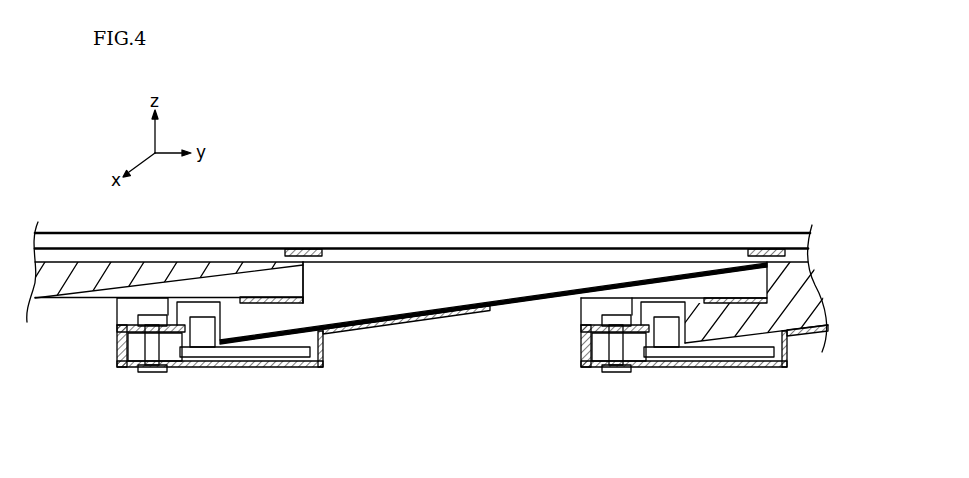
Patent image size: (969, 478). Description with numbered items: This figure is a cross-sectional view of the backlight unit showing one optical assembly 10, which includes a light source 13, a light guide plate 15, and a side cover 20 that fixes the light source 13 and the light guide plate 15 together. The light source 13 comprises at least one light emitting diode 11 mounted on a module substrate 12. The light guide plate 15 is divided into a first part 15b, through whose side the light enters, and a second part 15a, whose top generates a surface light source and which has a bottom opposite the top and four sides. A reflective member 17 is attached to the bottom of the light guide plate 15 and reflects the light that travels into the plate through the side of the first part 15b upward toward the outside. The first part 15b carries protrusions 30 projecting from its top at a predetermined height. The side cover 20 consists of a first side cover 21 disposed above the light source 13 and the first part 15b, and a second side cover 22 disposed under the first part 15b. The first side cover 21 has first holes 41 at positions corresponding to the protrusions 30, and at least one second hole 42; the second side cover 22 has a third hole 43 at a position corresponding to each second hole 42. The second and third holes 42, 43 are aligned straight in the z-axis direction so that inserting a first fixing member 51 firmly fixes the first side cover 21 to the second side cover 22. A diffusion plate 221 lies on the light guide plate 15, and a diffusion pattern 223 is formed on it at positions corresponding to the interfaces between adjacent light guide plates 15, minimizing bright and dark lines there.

The optical assembly 10 is at (558, 229).
The diffusion plate 221 is at (675, 240).
The diffusion pattern 223 is at (312, 256).
The light guide plate 15 is at (503, 227).
The second part 15a is at (368, 280).
The first part 15b is at (263, 308).
The protrusion 30 is at (232, 298).
The first hole 41 is at (200, 298).
The second hole 42 is at (122, 320).
The third hole 43 is at (163, 372).
The first fixing member 51 is at (148, 347).
The light emitting diode 11 is at (200, 340).
The module substrate 12 is at (257, 350).
The light source 13 is at (245, 380).
The reflective member 17 is at (500, 307).
The side cover 20 is at (269, 355).
The first side cover 21 is at (117, 333).
The second side cover 22 is at (121, 357).